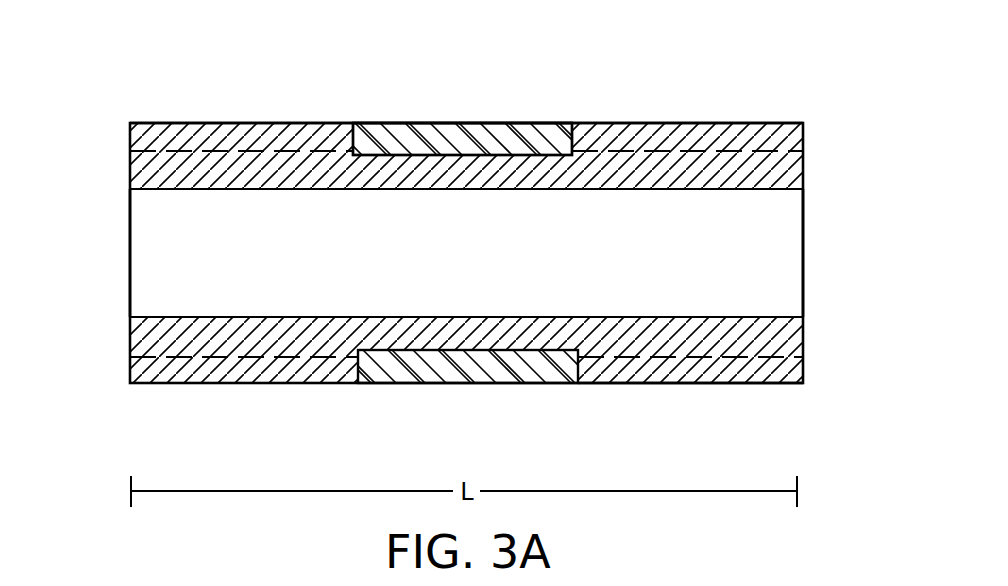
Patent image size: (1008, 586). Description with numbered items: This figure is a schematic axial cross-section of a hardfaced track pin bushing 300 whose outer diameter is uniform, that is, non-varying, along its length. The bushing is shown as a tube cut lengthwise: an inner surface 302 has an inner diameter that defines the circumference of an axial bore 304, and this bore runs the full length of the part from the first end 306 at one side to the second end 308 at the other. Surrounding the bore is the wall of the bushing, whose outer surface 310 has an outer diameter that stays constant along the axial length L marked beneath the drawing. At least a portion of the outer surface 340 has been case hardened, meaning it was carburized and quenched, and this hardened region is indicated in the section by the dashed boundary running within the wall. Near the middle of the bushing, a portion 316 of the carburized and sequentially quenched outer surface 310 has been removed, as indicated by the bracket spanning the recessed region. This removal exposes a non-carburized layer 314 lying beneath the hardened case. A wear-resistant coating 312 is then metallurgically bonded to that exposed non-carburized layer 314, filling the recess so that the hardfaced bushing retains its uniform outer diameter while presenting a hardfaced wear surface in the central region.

The track pin bushing 300 is at (637, 90).
The inner surface 302 is at (654, 190).
The axial bore 304 is at (451, 264).
The first end 306 is at (805, 232).
The second end 308 is at (128, 256).
The outer surface 310 is at (654, 385).
The wear-resistant coating 312 is at (533, 132).
The non-carburized layer 314 is at (437, 152).
The removed portion 316 is at (578, 397).
The case hardened outer surface portion 340 is at (287, 383).